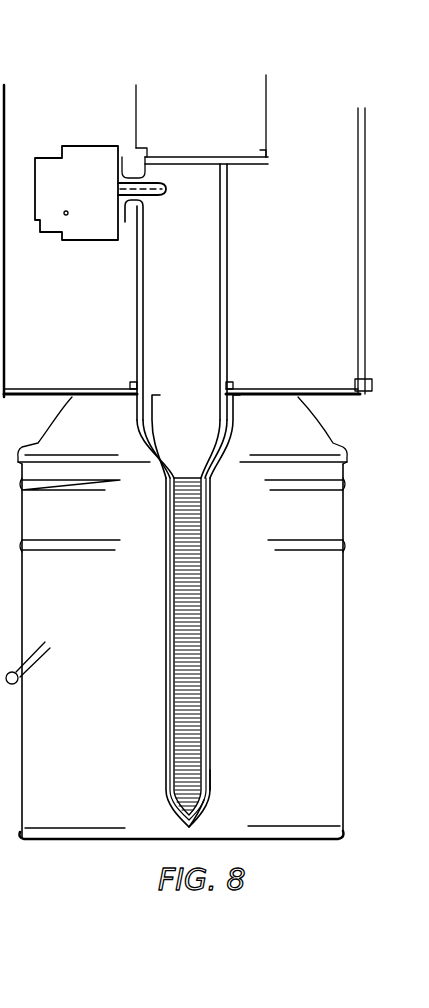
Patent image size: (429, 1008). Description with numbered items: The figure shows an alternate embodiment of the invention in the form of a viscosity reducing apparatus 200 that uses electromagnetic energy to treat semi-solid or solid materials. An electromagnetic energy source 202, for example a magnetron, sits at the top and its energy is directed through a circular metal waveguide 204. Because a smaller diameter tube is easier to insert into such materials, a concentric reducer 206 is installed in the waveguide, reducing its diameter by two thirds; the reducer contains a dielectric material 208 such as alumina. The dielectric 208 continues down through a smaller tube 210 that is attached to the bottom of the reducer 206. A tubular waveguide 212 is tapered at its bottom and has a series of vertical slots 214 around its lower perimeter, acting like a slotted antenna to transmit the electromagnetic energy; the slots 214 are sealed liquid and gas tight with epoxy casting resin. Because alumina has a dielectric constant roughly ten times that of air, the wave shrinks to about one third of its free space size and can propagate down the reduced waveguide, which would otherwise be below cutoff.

The viscosity reducing apparatus 200 is at (370, 128).
The electromagnetic energy source 202 is at (96, 233).
The circular metal waveguide 204 is at (208, 285).
The concentric reducer 206 is at (222, 449).
The dielectric material 208 is at (194, 431).
The smaller tube 210 is at (212, 722).
The tubular waveguide 212 is at (211, 783).
The vertical slots 214 is at (208, 806).